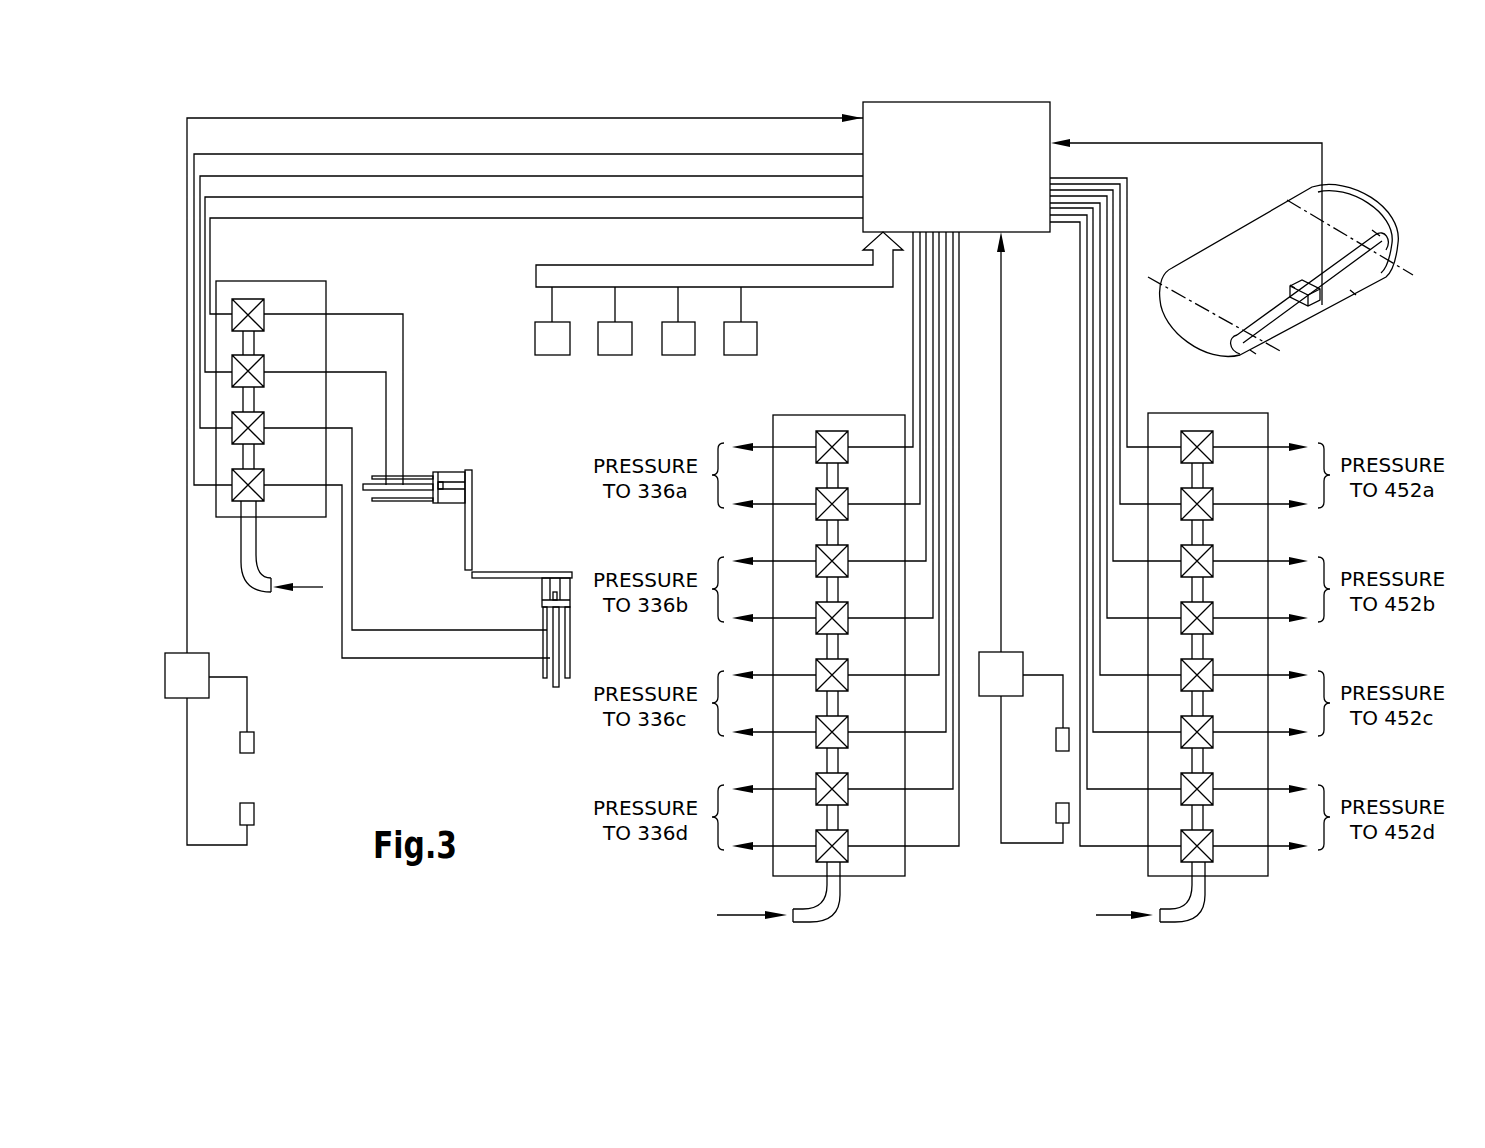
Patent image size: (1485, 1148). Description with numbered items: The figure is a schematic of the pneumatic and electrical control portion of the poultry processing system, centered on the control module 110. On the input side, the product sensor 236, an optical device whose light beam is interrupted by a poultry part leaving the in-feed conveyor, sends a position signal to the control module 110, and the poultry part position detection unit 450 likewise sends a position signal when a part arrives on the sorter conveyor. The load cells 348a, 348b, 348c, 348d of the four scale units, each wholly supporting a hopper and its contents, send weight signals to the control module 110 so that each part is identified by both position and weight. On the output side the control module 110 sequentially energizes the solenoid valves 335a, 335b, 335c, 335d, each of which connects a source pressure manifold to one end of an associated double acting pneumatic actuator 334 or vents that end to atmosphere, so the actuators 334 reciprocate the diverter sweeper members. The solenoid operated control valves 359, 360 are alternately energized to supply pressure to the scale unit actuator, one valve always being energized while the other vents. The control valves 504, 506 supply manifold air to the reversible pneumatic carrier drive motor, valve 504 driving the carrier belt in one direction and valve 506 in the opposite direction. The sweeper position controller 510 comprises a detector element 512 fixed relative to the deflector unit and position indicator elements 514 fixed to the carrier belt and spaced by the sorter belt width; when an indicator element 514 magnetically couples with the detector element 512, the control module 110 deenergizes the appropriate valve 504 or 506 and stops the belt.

The control module 110 is at (1048, 113).
The product sensor 236 is at (210, 663).
The actuator 334 is at (418, 488).
The solenoid valve 335a is at (263, 303).
The solenoid valve 335b is at (263, 367).
The solenoid valve 335c is at (263, 423).
The solenoid valve 335d is at (263, 481).
The load cell 348a is at (545, 350).
The load cell 348b is at (613, 350).
The load cell 348c is at (673, 347).
The load cell 348d is at (737, 345).
The solenoid operated control valve 359 is at (834, 432).
The solenoid operated control valve 360 is at (852, 497).
The poultry part position detection unit 450 is at (1031, 656).
The control valve 504 is at (1197, 433).
The control valve 506 is at (1198, 491).
The sweeper position controller 510 is at (1330, 340).
The detector element 512 is at (1308, 297).
The position indicator element 514 is at (1377, 233).